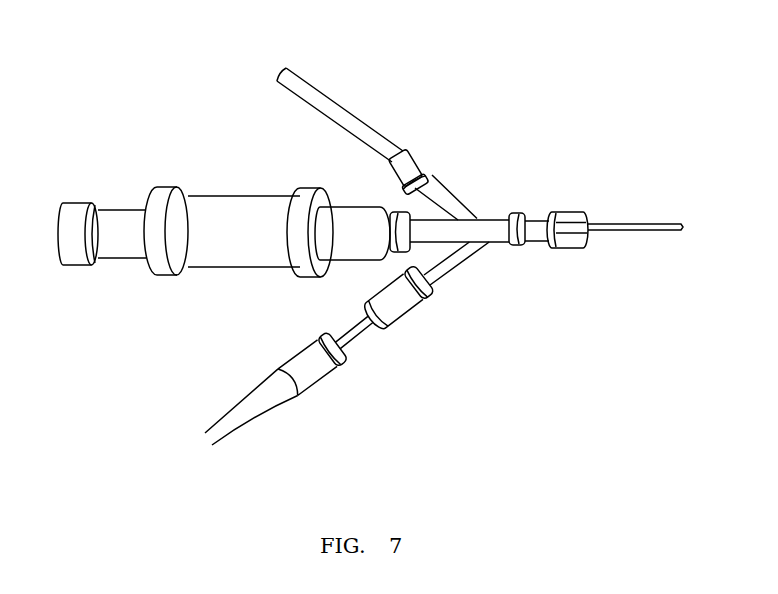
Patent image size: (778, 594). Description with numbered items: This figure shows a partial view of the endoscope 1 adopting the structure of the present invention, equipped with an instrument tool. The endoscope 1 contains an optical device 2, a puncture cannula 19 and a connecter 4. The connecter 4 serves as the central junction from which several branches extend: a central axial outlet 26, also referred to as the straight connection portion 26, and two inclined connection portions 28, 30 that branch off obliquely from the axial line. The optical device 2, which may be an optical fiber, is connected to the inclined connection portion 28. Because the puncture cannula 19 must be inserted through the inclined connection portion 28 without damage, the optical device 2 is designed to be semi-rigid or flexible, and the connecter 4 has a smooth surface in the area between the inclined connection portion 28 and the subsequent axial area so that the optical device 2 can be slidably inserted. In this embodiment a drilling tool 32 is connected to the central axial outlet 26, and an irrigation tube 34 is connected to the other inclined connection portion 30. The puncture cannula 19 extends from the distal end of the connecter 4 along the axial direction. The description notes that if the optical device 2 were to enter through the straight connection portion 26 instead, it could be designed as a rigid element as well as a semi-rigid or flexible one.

The endoscope 1 is at (543, 175).
The optical device 2 is at (410, 336).
The connecter 4 is at (480, 185).
The puncture cannula 19 is at (628, 228).
The central axial outlet 26 is at (427, 227).
The inclined connection portion 28 is at (439, 268).
The inclined connection portion 30 is at (459, 199).
The drilling tool 32 is at (217, 203).
The irrigation tube 34 is at (330, 109).